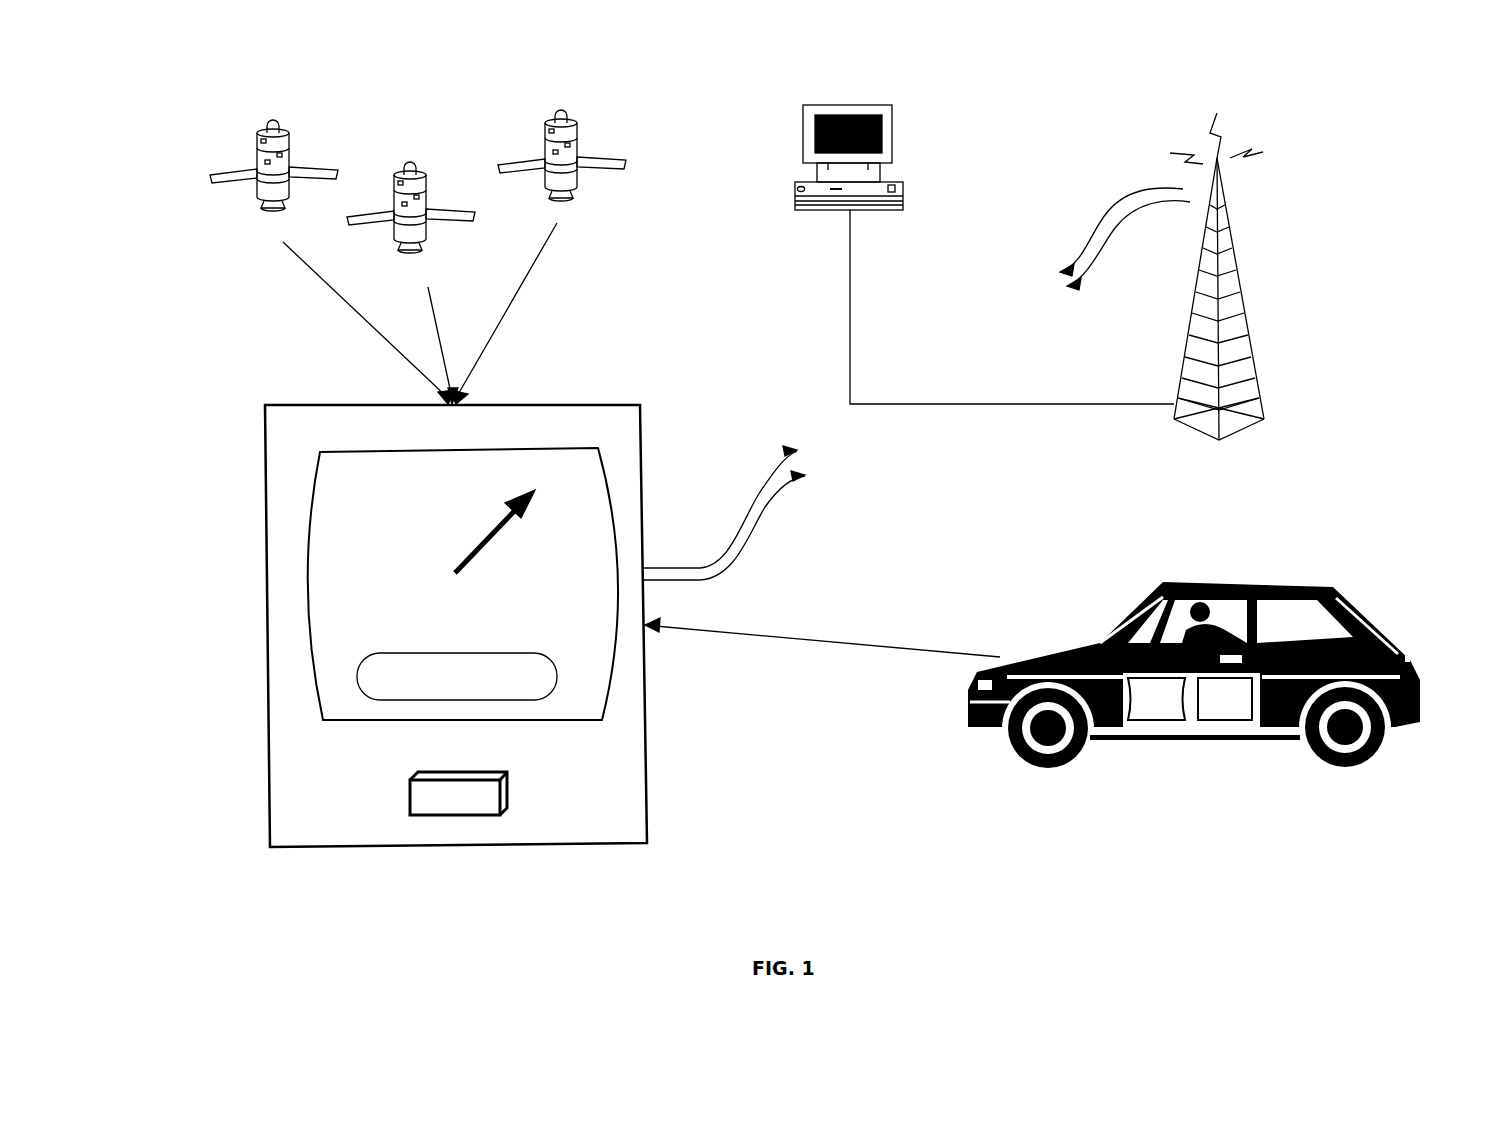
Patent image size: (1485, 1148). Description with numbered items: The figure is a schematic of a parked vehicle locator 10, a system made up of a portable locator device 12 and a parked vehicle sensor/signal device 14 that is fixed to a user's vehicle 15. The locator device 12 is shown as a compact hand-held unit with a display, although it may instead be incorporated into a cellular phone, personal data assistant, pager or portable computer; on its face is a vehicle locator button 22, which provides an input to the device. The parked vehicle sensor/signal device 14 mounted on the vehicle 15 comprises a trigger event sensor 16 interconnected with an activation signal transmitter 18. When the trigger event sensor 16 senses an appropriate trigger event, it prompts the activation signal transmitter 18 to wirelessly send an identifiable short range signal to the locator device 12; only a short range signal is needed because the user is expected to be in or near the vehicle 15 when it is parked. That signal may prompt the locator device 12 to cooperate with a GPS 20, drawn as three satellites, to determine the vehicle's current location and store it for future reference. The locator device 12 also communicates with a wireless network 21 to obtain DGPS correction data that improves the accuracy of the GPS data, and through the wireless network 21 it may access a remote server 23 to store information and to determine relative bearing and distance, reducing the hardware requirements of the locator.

The parked vehicle locator 10 is at (812, 781).
The portable locator device 12 is at (535, 660).
The parked vehicle sensor/signal device 14 is at (1189, 762).
The vehicle 15 is at (1032, 726).
The trigger event sensor 16 is at (1297, 842).
The activation signal transmitter 18 is at (1082, 852).
The GPS 20 is at (292, 143).
The wireless network 21 is at (1227, 184).
The vehicle locator button 22 is at (437, 807).
The remote server 23 is at (879, 96).